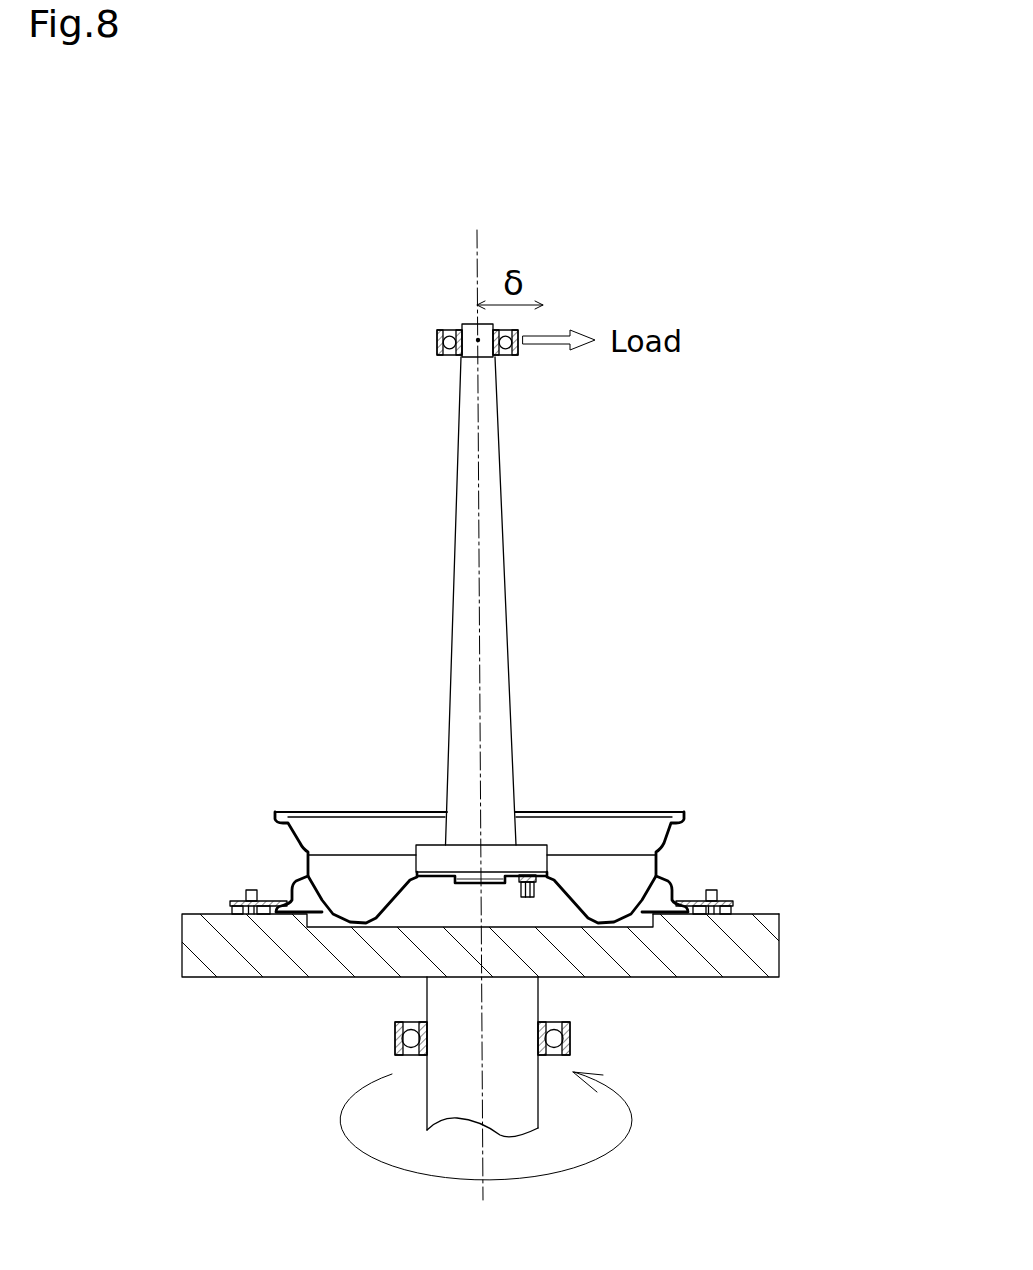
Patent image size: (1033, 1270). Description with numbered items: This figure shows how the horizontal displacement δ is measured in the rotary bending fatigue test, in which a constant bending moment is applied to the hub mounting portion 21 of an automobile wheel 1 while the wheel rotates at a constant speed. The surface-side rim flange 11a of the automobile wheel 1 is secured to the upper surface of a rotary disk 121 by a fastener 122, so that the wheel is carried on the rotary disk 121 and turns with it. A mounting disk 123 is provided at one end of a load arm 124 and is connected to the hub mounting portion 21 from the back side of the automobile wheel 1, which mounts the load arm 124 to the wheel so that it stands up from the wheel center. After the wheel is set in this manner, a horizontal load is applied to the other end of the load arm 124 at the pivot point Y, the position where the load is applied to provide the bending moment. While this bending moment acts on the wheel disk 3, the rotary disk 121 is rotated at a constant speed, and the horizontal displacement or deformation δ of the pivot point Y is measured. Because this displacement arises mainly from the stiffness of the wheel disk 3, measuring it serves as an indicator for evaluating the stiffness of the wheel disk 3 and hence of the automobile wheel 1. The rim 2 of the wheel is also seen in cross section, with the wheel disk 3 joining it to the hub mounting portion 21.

The pivot point Y is at (478, 340).
The automobile wheel 1 is at (632, 807).
The rim 2 is at (672, 824).
The wheel disk 3 is at (395, 898).
The hub mounting portion 21 is at (432, 882).
The rotary disk 121 is at (265, 960).
The fastener 122 is at (270, 900).
The mounting disk 123 is at (520, 858).
The load arm 124 is at (465, 558).
The surface-side rim flange 11a is at (690, 915).